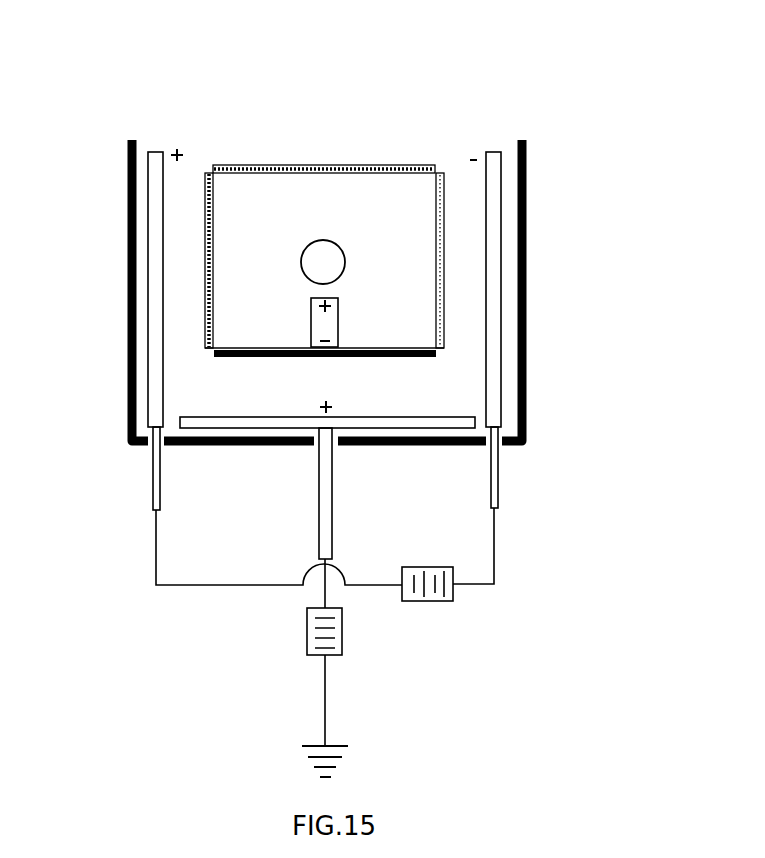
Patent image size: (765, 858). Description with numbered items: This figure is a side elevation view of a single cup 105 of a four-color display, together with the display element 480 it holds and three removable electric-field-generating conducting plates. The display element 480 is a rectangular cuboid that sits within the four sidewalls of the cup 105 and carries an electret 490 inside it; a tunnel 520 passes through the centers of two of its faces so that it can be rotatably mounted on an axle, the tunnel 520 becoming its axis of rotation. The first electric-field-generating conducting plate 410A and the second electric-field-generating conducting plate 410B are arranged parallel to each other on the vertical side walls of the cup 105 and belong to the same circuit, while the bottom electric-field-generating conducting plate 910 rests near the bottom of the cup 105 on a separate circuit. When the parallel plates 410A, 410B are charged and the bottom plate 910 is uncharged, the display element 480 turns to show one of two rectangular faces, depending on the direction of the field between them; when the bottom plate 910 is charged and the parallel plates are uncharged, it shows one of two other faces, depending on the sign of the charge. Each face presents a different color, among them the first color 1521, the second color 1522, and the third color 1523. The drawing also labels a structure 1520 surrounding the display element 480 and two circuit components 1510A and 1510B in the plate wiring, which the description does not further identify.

The cup 105 is at (527, 254).
The first electric-field-generating conducting plate 410A is at (152, 162).
The second electric-field-generating conducting plate 410B is at (493, 162).
The display element 480 is at (272, 243).
The electret 490 is at (323, 330).
The tunnel 520 is at (339, 224).
The bottom electric-field-generating conducting plate 910 is at (220, 424).
The container 1520 is at (194, 256).
The first color 1521 is at (313, 147).
The second color 1522 is at (447, 240).
The third color 1523 is at (339, 366).
The first resistor 1510A is at (307, 640).
The second resistor 1510B is at (428, 602).